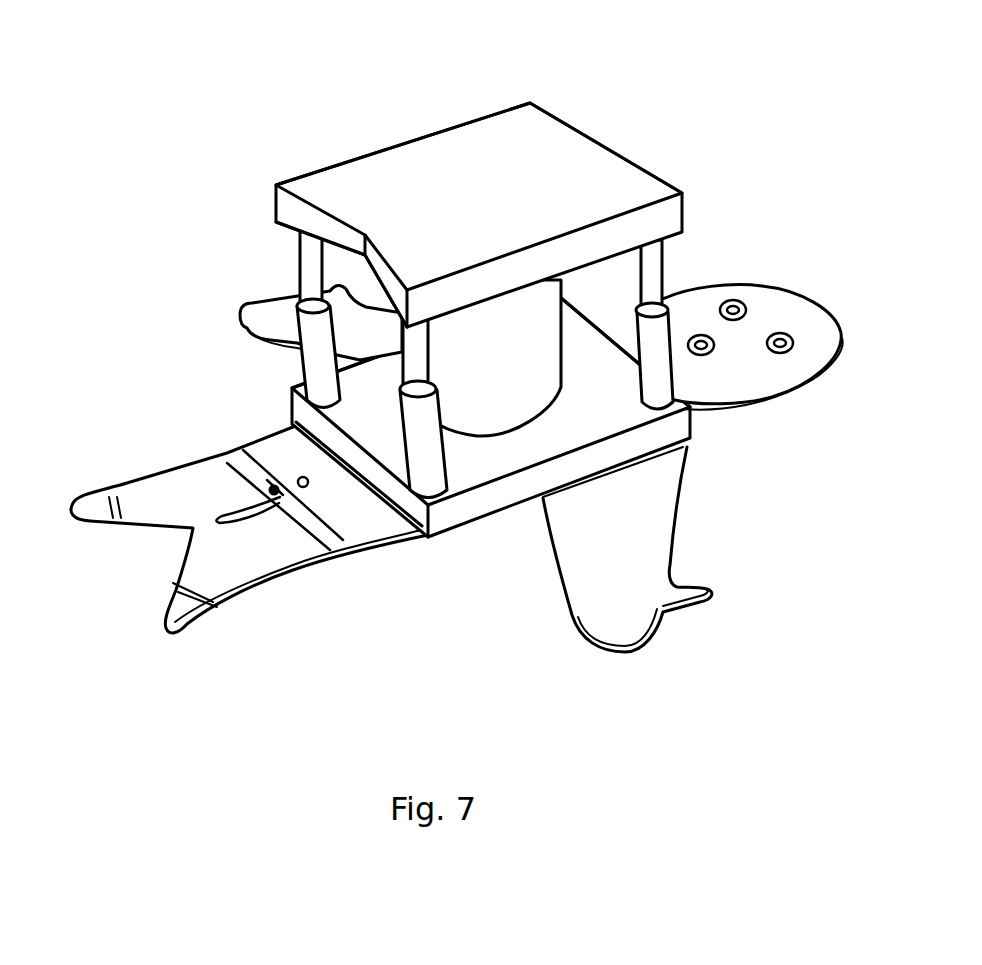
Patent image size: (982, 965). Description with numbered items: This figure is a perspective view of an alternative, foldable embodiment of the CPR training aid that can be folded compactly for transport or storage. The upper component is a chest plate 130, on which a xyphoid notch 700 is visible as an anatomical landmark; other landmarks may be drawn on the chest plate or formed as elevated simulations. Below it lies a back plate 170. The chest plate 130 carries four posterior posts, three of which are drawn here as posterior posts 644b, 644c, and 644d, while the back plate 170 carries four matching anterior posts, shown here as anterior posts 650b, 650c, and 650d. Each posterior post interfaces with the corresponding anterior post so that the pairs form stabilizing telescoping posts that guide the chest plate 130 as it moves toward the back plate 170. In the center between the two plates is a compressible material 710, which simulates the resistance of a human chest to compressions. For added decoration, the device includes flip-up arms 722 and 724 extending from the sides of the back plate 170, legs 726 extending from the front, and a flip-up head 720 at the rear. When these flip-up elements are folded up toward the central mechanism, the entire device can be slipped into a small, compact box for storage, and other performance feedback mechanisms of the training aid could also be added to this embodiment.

The chest plate 130 is at (513, 147).
The xyphoid notch 700 is at (365, 235).
The posterior post 644b is at (645, 272).
The posterior post 644c is at (303, 275).
The posterior post 644d is at (402, 348).
The anterior post 650b is at (647, 367).
The anterior post 650c is at (322, 355).
The anterior post 650d is at (422, 463).
The compressible material 710 is at (500, 383).
The back plate 170 is at (470, 463).
The flip-up head 720 is at (745, 335).
The flip-up arm 722 is at (617, 557).
The flip-up arm 724 is at (272, 323).
The legs 726 is at (273, 528).